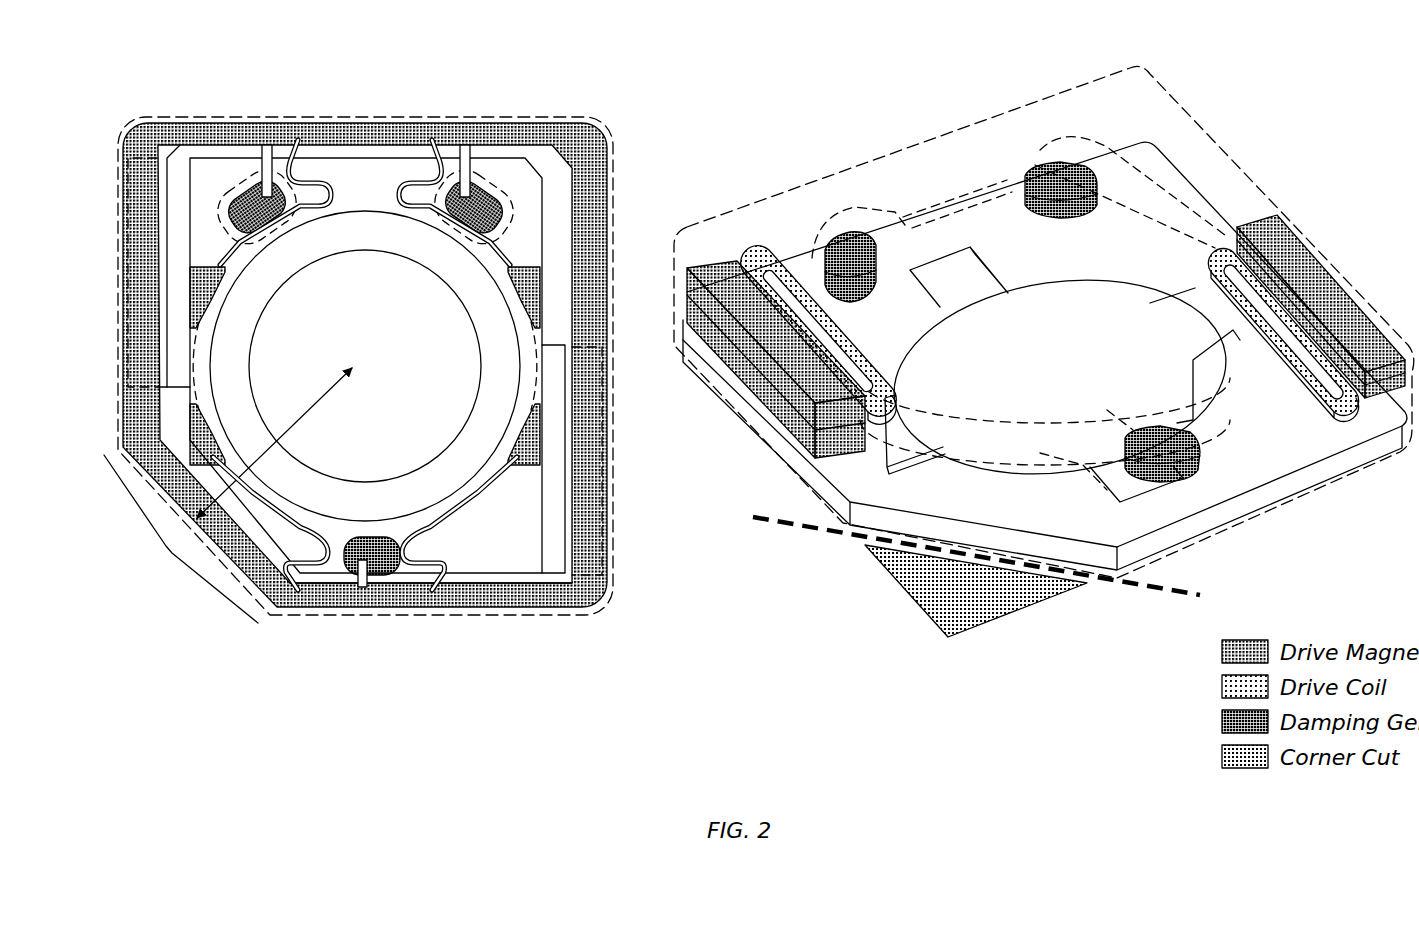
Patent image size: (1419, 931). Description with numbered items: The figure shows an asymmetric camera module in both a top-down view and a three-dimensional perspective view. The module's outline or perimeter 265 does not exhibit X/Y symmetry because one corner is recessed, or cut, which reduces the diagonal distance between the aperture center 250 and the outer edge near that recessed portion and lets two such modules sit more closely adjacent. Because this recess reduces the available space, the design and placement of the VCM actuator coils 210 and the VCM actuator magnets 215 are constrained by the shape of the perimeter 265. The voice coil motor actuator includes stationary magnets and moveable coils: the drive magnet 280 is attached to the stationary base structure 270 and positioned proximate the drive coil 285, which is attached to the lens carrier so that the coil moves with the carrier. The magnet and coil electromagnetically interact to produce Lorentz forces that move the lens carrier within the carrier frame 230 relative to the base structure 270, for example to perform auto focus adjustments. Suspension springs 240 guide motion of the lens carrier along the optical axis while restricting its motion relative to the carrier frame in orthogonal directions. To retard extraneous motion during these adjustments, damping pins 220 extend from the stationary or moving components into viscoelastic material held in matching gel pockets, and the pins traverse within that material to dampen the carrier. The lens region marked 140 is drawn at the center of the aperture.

The VCM actuator coils 210 is at (180, 167).
The VCM actuator magnets 215 is at (147, 333).
The damping pins 220 is at (265, 167).
The carrier frame 230 is at (507, 575).
The suspension springs 240 is at (202, 283).
The aperture center 250 is at (352, 366).
The lens carrier 140 is at (322, 413).
The perimeter 265 is at (118, 405).
The base structure 270 is at (1220, 497).
The drive magnet 280 is at (1313, 250).
The drive coil 285 is at (1313, 348).